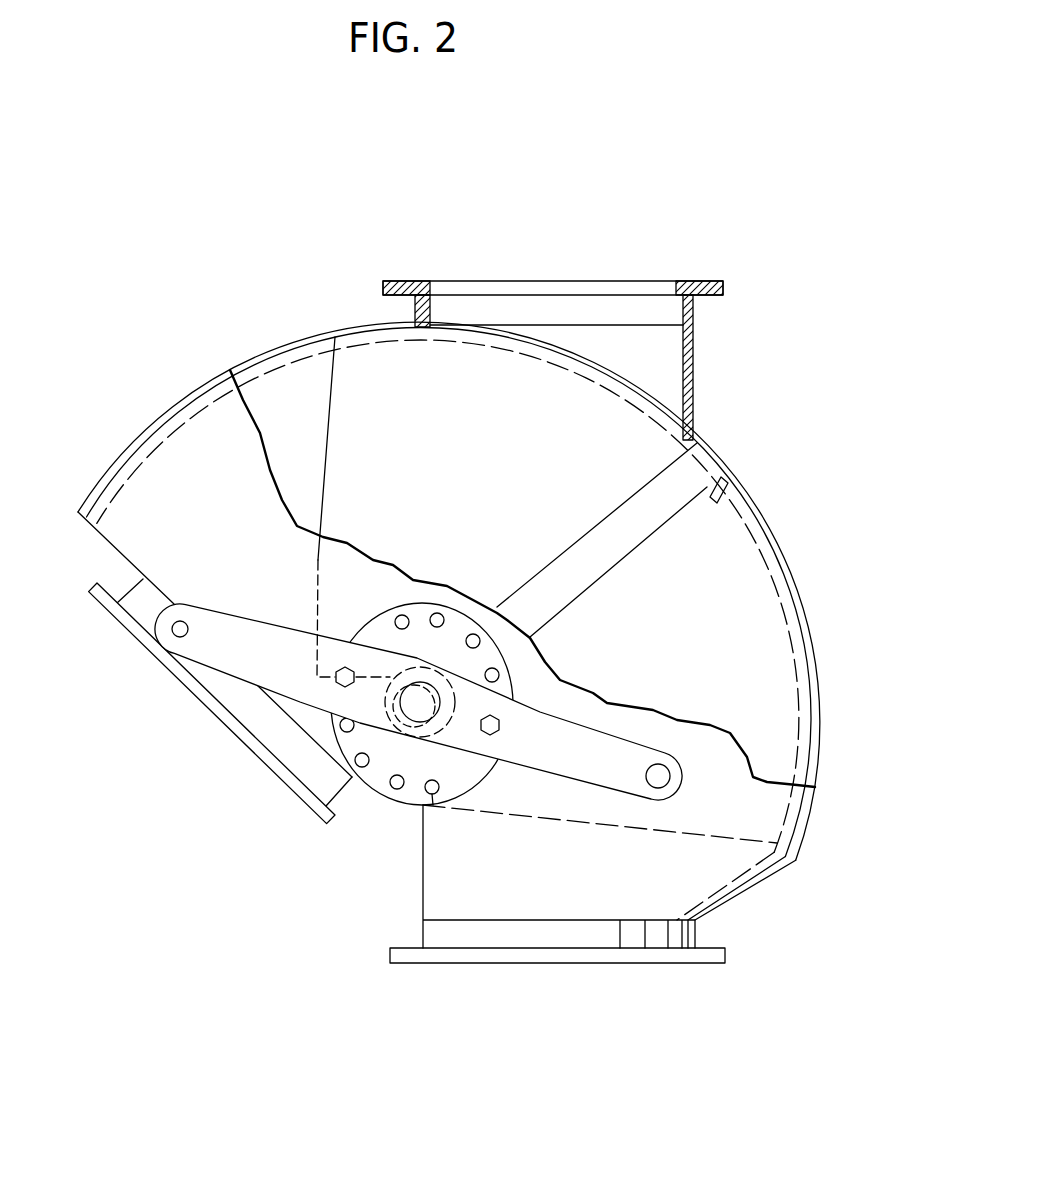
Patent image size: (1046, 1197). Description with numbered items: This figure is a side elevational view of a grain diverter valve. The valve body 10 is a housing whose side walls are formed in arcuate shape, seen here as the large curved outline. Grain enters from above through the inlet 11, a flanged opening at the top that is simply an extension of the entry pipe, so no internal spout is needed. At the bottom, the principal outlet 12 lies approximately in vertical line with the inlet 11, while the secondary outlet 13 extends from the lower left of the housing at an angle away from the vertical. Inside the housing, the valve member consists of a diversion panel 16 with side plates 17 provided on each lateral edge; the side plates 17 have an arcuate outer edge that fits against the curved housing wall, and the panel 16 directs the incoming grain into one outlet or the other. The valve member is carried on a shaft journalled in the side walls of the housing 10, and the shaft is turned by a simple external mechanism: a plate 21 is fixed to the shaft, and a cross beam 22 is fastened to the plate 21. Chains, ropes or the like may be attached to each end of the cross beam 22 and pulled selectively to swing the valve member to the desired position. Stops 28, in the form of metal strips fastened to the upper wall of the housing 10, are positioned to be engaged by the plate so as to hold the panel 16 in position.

The valve body 10 is at (190, 387).
The inlet 11 is at (605, 283).
The principal outlet 12 is at (586, 963).
The secondary outlet 13 is at (226, 712).
The diversion panel 16 is at (581, 583).
The side plates 17 is at (522, 578).
The plate 21 is at (373, 780).
The cross beam 22 is at (560, 778).
The stops 28 is at (366, 337).